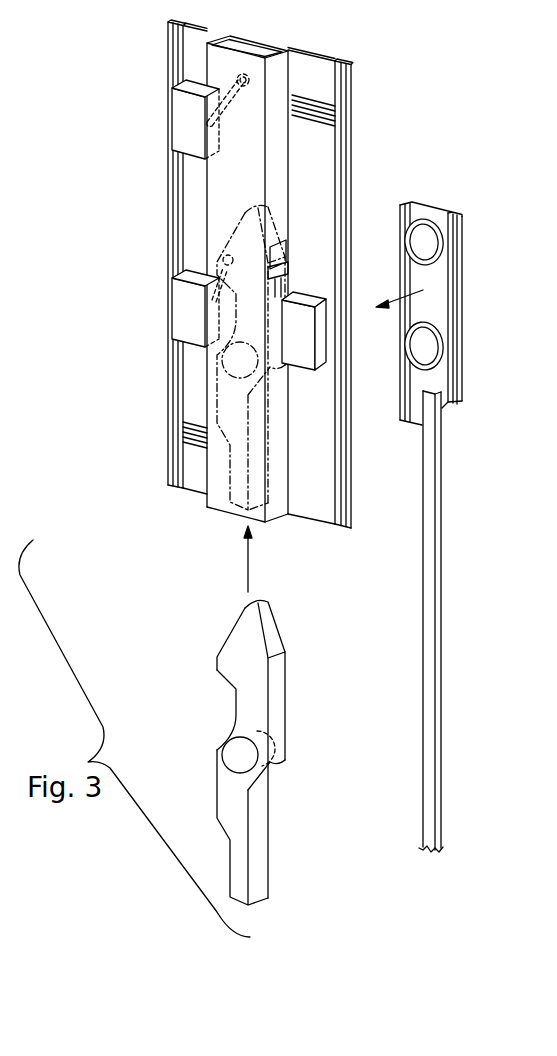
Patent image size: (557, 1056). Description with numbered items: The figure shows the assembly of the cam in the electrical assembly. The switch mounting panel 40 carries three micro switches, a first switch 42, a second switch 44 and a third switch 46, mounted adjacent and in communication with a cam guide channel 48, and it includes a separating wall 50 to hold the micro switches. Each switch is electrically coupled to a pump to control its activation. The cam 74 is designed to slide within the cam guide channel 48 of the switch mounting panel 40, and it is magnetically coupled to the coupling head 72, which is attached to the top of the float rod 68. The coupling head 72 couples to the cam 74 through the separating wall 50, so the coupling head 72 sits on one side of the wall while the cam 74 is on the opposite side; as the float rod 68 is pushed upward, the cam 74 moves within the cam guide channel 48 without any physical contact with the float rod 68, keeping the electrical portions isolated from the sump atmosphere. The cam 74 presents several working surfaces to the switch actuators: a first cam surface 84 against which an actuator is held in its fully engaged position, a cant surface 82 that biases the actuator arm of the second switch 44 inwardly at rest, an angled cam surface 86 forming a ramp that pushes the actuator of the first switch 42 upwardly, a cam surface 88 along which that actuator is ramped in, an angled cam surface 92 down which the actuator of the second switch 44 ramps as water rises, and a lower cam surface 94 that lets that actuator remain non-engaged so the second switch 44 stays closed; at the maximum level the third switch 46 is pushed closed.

The switch mounting panel 40 is at (161, 195).
The first switch 42 is at (180, 308).
The second switch 44 is at (297, 365).
The third switch 46 is at (183, 122).
The cam guide channel 48 is at (257, 50).
The separating wall 50 is at (307, 87).
The float rod 68 is at (428, 716).
The coupling head 72 is at (453, 273).
The cam 74 is at (253, 687).
The cant surface 82 is at (280, 678).
The first cam surface 84 is at (217, 660).
The angled cam surface 86 is at (227, 677).
The cam surface 88 is at (221, 728).
The angled cam surface 92 is at (268, 770).
The lower cam surface 94 is at (258, 875).